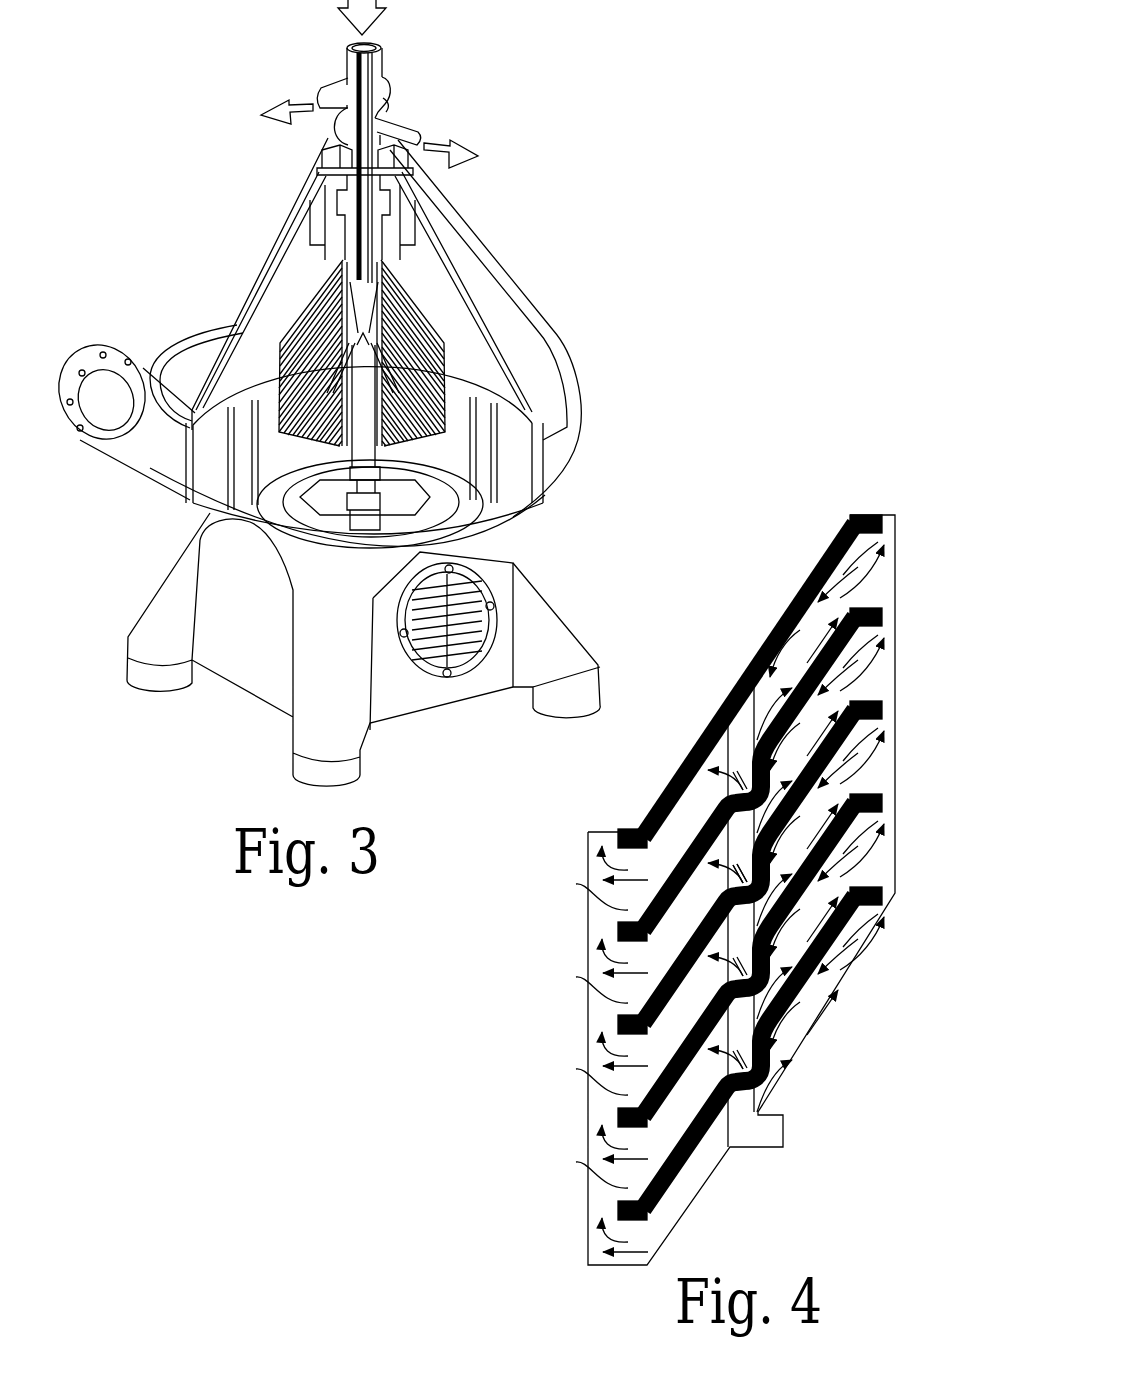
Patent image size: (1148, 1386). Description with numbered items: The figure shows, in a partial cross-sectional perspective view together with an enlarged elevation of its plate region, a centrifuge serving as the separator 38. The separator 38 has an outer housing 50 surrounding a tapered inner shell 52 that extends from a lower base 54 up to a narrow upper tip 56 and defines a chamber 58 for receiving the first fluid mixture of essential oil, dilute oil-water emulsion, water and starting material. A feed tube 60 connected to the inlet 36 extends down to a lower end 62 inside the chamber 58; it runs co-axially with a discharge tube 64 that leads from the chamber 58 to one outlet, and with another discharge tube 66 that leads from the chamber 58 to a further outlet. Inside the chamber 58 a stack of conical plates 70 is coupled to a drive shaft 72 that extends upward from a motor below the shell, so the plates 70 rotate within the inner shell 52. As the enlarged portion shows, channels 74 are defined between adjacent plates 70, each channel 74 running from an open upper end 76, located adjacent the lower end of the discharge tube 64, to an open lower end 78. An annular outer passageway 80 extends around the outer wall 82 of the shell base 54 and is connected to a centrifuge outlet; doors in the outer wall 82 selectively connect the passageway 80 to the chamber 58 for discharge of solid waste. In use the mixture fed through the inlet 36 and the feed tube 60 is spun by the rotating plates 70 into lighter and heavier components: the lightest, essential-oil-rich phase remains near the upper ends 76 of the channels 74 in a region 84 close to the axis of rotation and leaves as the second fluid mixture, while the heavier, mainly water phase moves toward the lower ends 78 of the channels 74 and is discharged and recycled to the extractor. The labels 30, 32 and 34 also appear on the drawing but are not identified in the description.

In FIG. 3, the centrifugal separator 30 is at (612, 138).
In FIG. 3, the inlet pipe 32 is at (383, 56).
In FIG. 3, the light phase outlet 34 is at (328, 84).
In FIG. 3, the inlet 36 is at (405, 128).
In FIG. 3, the separator 38 is at (98, 417).
In FIG. 3, the outer housing 50 is at (533, 323).
In FIG. 3, the inner shell 52 is at (435, 267).
In FIG. 3, the lower base 54 is at (510, 293).
In FIG. 3, the upper tip 56 is at (400, 172).
In FIG. 3, the chamber 58 is at (478, 393).
In FIG. 3, the feed tube 60 is at (378, 102).
In FIG. 3, the lower end 62 is at (347, 278).
In FIG. 3, the discharge tube 64 is at (390, 117).
In FIG. 3, the discharge tube 66 is at (325, 182).
In FIG. 3, the plate 70 is at (268, 392).
In FIG. 4, the plate 70 is at (883, 529).
In FIG. 3, the drive shaft 72 is at (505, 512).
In FIG. 3, the channel 74 is at (298, 438).
In FIG. 4, the channel 74 is at (560, 912).
In FIG. 4, the upper end 76 is at (886, 590).
In FIG. 4, the lower end 78 is at (586, 1028).
In FIG. 3, the annular outer passageway 80 is at (536, 448).
In FIG. 3, the outer wall 82 is at (262, 438).
In FIG. 4, the region 84 is at (818, 628).